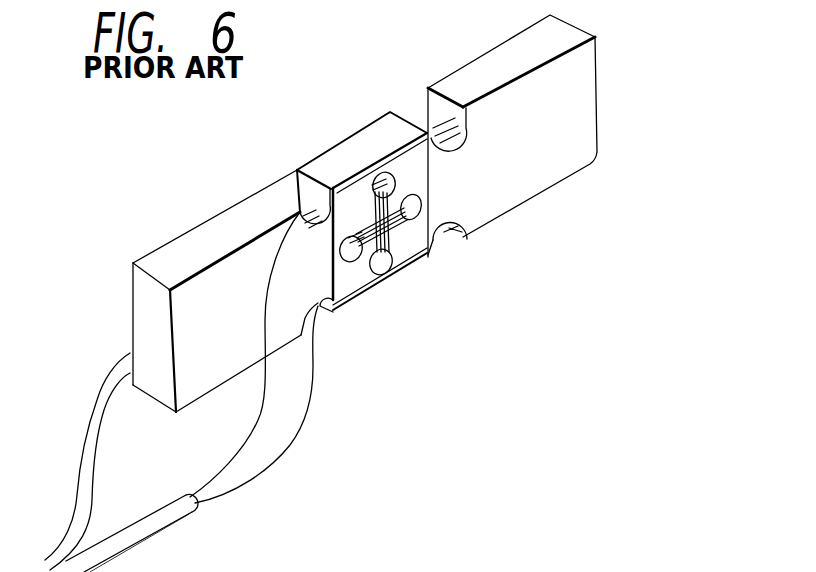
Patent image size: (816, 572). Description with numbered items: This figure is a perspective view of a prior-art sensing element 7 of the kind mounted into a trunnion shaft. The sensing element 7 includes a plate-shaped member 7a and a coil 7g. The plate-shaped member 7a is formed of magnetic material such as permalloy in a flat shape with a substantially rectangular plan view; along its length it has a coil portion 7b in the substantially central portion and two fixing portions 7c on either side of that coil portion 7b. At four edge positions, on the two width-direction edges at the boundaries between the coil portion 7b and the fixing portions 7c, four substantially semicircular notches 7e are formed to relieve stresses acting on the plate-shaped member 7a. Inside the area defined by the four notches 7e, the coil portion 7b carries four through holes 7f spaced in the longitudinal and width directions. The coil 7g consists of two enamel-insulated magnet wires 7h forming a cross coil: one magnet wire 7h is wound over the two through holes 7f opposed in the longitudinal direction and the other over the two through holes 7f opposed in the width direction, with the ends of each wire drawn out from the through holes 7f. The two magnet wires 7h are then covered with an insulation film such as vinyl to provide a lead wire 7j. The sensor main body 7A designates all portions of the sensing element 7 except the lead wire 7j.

The sensing element 7 is at (626, 95).
The plate-shaped member 7a is at (617, 48).
The sensor main body 7A is at (546, 237).
The coil portion 7b is at (342, 150).
The fixing portion 7c is at (193, 240).
The notch 7e is at (297, 197).
The through hole 7f is at (407, 194).
The coil 7g is at (414, 252).
The magnet wire 7h is at (263, 417).
The lead wire 7j is at (186, 517).